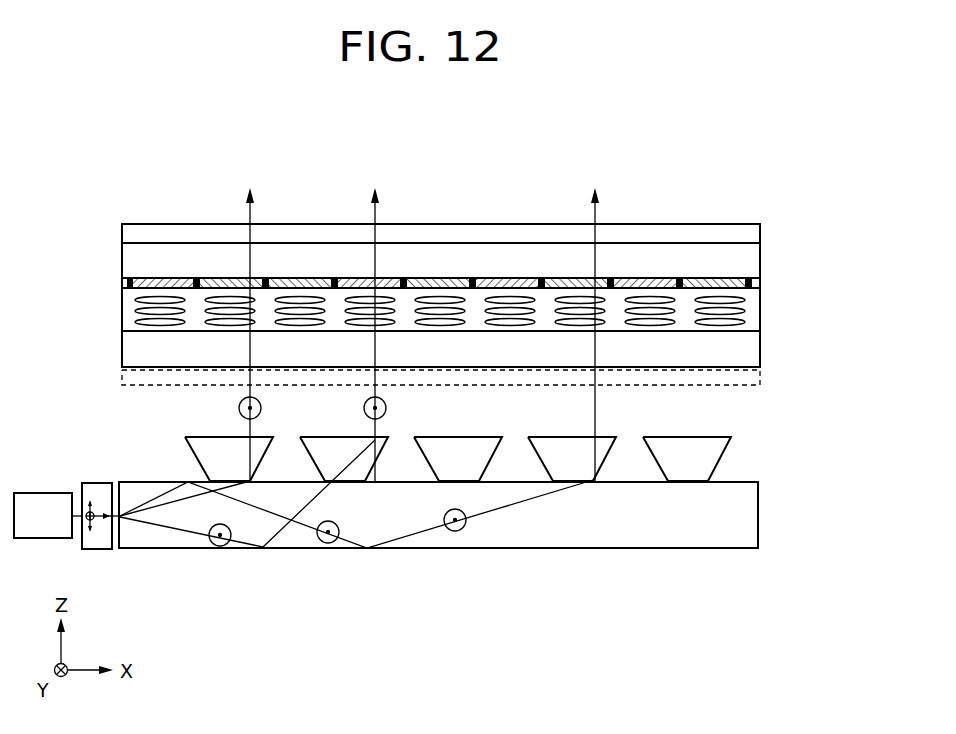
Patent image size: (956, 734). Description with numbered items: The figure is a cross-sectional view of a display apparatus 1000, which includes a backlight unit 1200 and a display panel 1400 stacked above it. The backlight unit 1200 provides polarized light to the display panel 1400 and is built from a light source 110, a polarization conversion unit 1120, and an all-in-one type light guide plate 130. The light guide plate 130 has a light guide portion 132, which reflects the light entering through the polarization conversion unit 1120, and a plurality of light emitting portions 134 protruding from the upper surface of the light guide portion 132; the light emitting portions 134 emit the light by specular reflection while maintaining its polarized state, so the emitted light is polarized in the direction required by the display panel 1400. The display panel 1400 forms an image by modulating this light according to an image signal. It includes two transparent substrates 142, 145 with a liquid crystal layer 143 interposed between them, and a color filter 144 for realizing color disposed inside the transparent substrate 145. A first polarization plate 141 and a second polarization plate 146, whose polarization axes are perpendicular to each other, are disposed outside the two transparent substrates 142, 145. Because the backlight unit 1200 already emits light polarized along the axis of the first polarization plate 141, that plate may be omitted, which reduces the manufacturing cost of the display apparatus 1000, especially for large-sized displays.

The display apparatus 1000 is at (716, 183).
The display panel 1400 is at (783, 284).
The backlight unit 1200 is at (777, 419).
The second polarization plate 146 is at (122, 234).
The transparent substrate 145 is at (122, 260).
The color filter 144 is at (122, 283).
The liquid crystal layer 143 is at (122, 314).
The transparent substrate 142 is at (122, 349).
The first polarization plate 141 is at (413, 382).
The light guide plate 130 is at (815, 438).
The light guide portion 132 is at (758, 512).
The light emitting portions 134 is at (730, 445).
The light source 110 is at (39, 493).
The polarization conversion unit 1120 is at (100, 483).